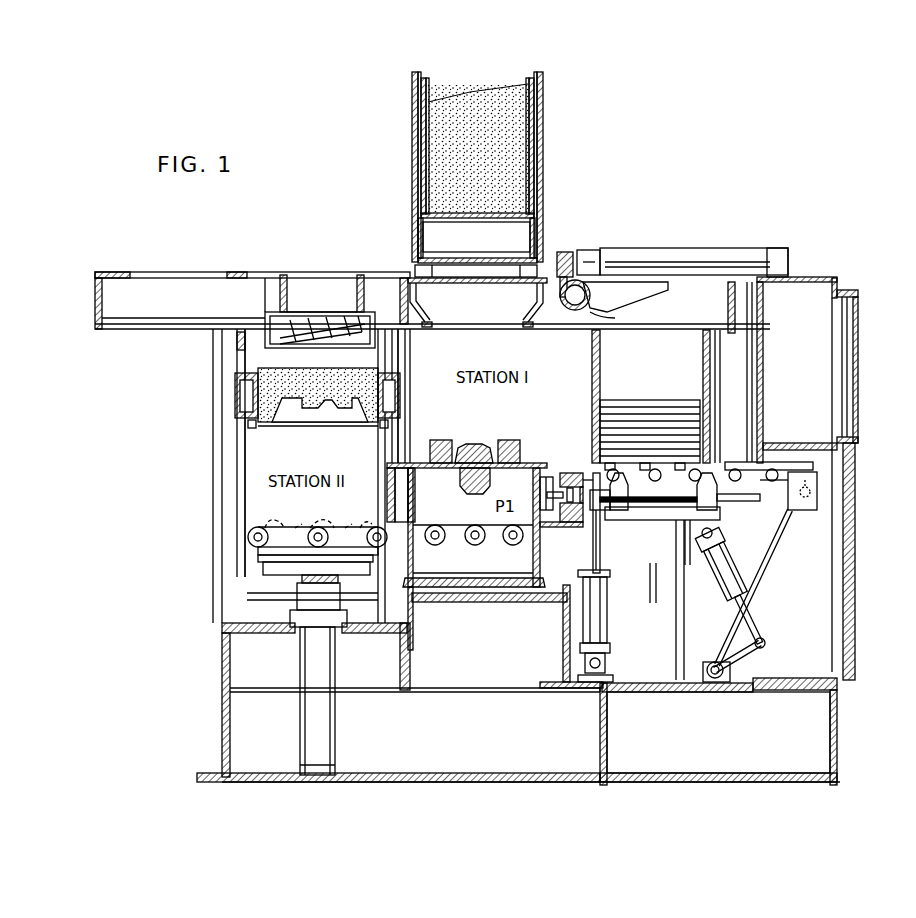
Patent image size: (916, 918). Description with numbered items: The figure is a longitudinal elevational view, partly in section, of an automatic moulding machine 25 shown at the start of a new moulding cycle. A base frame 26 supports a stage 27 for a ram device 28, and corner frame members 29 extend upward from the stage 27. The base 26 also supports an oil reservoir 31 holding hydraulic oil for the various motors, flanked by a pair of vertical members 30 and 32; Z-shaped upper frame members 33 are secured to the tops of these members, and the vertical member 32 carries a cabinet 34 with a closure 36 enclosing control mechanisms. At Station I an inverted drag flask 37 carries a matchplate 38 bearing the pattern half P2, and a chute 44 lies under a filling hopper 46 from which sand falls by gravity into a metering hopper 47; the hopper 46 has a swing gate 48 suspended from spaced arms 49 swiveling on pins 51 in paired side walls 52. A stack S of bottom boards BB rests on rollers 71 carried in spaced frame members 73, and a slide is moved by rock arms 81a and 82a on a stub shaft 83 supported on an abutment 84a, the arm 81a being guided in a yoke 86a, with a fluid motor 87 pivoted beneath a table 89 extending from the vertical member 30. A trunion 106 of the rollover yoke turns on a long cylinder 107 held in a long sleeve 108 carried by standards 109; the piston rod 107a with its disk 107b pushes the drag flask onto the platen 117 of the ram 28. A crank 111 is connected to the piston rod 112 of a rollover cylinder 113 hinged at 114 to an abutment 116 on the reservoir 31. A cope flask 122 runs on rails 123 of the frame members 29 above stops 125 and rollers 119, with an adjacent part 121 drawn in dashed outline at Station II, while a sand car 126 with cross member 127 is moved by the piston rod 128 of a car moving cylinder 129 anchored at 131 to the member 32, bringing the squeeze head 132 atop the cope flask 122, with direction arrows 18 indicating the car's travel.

The direction arrow 18 is at (452, 56).
The moulding machine 25 is at (840, 212).
The base frame 26 is at (262, 782).
The stage 27 is at (222, 690).
The ram device 28 is at (320, 665).
The corner frame members 29 is at (222, 472).
The vertical member 30 is at (688, 640).
The oil reservoir 31 is at (838, 748).
The vertical member 32 is at (750, 298).
The Z-shaped upper frame members 33 is at (160, 272).
The cabinet 34 is at (838, 278).
The closure 36 is at (858, 355).
The drag flask 37 is at (528, 462).
The matchplate 38 is at (390, 466).
The chute 44 is at (540, 568).
The filling hopper 46 is at (543, 180).
The metering hopper 47 is at (418, 235).
The swing gate 48 is at (535, 215).
The spaced arms 49 is at (425, 160).
The pins 51 is at (415, 104).
The side walls 52 is at (418, 137).
The rollers 71 is at (660, 470).
The frame members 73 is at (768, 470).
The rock arm 81a is at (780, 530).
The rock arm 82a is at (765, 655).
The pivot 83 is at (722, 682).
The abutment 84a is at (708, 690).
The yoke 86a is at (817, 485).
The fluid motor 87 is at (750, 583).
The table 89 is at (666, 583).
The trunion 106 is at (585, 470).
The long cylinder 107 is at (817, 500).
The piston rod 107a is at (550, 472).
The disk 107b is at (540, 490).
The long sleeve 108 is at (650, 515).
The standards 109 is at (620, 510).
The crank 111 is at (600, 515).
The piston rod 112 is at (605, 568).
The rollover cylinder 113 is at (607, 630).
The hinge connection 114 is at (608, 662).
The abutment 116 is at (615, 678).
The platen 117 is at (263, 567).
The rollers 119 is at (250, 532).
The dashed outline 121 is at (340, 528).
The cope flask 122 is at (235, 395).
The rails 123 is at (248, 440).
The stops 125 is at (248, 424).
The sand car 126 is at (362, 278).
The cross member 127 is at (612, 325).
The piston rod 128 is at (582, 252).
The car moving cylinder 129 is at (710, 250).
The anchor 131 is at (778, 272).
The squeeze head 132 is at (285, 332).
The stack S is at (633, 400).
The bottom board BB is at (258, 557).
The pattern half P2 is at (510, 440).